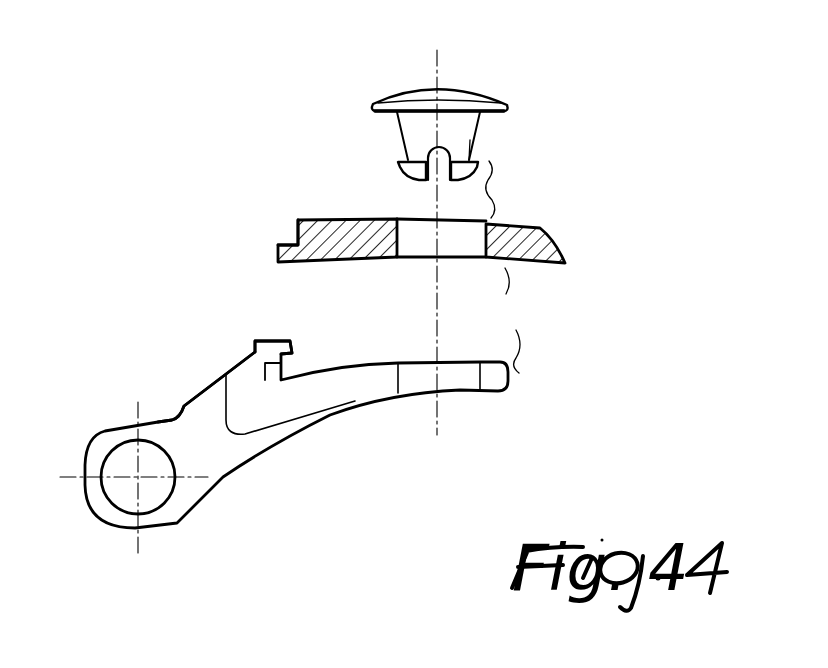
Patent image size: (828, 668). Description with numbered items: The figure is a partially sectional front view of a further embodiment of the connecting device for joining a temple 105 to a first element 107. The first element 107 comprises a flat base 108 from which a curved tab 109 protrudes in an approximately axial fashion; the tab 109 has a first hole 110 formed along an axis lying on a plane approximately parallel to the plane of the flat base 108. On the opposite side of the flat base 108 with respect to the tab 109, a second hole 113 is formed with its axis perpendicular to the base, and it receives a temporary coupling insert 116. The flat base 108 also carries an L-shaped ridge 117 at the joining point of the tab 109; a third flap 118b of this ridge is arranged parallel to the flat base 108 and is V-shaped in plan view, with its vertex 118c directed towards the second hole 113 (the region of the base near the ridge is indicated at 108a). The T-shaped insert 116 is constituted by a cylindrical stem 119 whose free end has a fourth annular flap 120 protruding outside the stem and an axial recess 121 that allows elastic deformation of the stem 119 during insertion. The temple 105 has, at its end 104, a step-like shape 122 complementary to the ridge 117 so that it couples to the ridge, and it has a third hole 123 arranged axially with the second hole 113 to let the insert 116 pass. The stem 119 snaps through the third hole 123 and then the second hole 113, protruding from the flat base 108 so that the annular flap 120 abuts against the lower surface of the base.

The end 104 is at (285, 212).
The temple 105 is at (535, 243).
The first element 107 is at (143, 275).
The flat base 108 is at (349, 388).
The lever arm upper edge 108a is at (244, 395).
The curved tab 109 is at (98, 423).
The first hole 110 is at (155, 495).
The second hole 113 is at (462, 380).
The temporary coupling insert 116 is at (474, 72).
The L-shaped ridge 117 is at (269, 338).
The third flap 118b is at (282, 380).
The vertex 118c is at (293, 351).
The cylindrical stem 119 is at (473, 123).
The fourth annular flap 120 is at (397, 166).
The axial recess 121 is at (436, 173).
The step-like shape 122 is at (269, 249).
The third hole 123 is at (450, 247).